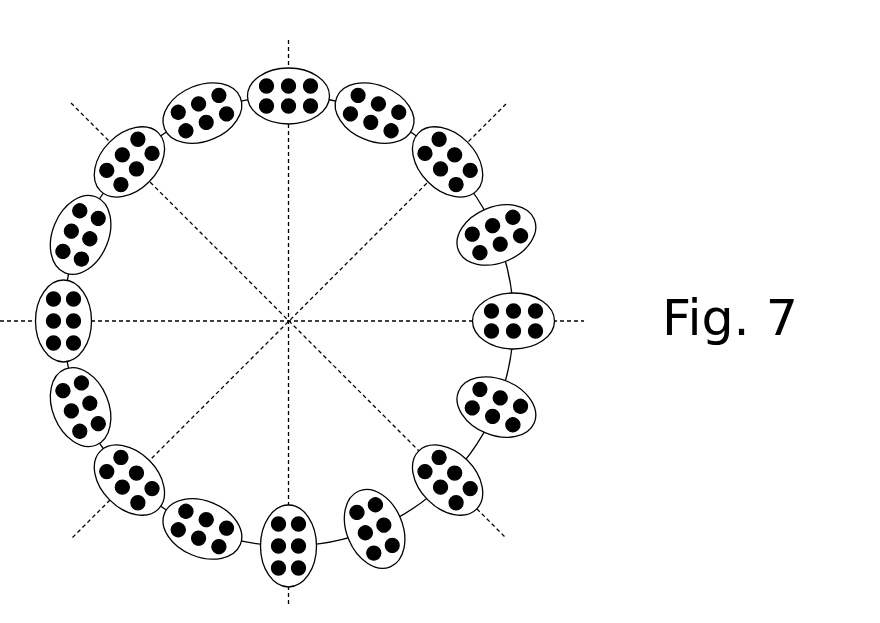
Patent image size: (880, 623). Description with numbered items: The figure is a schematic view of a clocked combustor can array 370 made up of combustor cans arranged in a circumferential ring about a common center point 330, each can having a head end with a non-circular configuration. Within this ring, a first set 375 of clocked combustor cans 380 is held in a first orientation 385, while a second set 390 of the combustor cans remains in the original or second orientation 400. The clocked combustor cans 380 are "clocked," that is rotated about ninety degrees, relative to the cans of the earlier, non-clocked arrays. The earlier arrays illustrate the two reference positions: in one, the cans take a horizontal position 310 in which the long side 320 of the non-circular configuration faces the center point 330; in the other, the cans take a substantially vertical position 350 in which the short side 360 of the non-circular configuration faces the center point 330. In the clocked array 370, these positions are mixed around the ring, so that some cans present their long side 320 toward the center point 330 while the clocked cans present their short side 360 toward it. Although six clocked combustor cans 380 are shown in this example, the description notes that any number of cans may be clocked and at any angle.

The horizontal position 310 is at (276, 102).
The long side 320 is at (273, 125).
The center point 330 is at (288, 320).
The vertical position 350 is at (507, 306).
The short side 360 is at (473, 310).
The clocked combustor can array 370 is at (93, 73).
The first set 375 is at (339, 549).
The clocked combustor cans 380 is at (508, 254).
The first orientation 385 is at (373, 568).
The second set 390 is at (156, 508).
The second orientation 400 is at (163, 547).